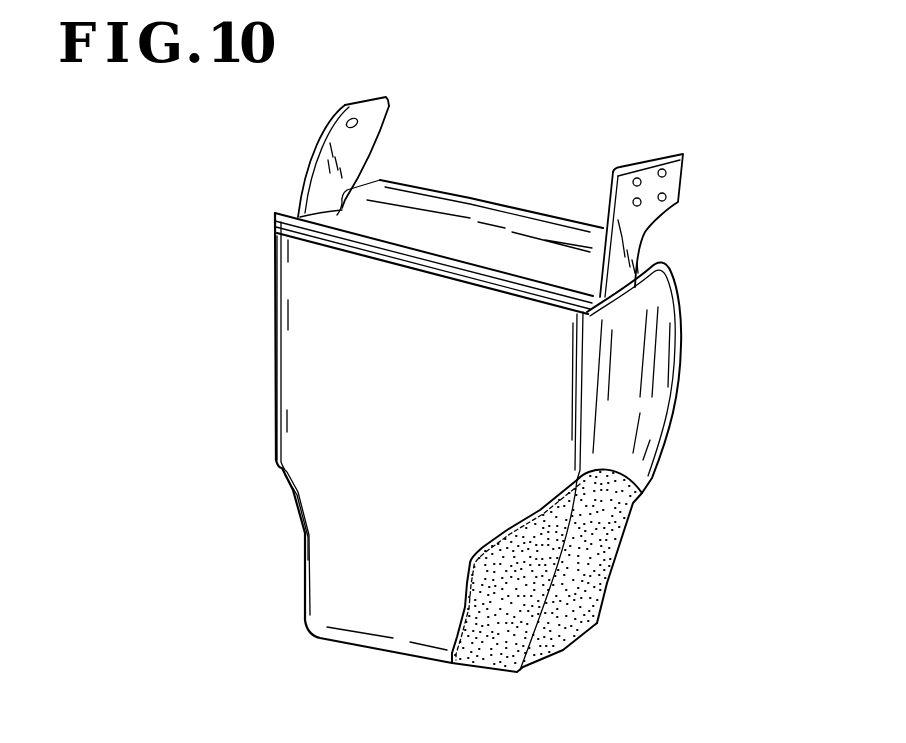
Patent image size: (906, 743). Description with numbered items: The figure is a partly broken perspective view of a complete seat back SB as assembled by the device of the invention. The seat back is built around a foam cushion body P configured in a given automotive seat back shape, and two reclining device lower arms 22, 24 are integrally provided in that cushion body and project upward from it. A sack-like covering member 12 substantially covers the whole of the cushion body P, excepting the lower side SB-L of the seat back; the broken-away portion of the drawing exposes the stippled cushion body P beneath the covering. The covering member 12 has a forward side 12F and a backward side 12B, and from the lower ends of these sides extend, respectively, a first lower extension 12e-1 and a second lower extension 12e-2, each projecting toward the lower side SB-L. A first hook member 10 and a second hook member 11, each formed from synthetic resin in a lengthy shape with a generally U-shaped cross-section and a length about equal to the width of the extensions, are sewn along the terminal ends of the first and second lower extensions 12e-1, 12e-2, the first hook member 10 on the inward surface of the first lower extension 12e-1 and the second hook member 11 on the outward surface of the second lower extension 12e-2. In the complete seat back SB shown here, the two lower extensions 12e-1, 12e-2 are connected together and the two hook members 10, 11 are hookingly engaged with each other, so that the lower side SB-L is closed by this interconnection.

The first hook member 10 is at (348, 233).
The second hook member 11 is at (402, 242).
The sack-like covering member 12 is at (322, 502).
The backward side of covering member 12B is at (320, 389).
The forward side of covering member 12F is at (683, 325).
The first lower extension 12e-1 is at (357, 273).
The second lower extension 12e-2 is at (487, 233).
The reclining device lower arm 22 is at (318, 152).
The reclining device lower arm 24 is at (677, 188).
The complete seat back SB is at (683, 410).
The lower side of seat back SB-L is at (483, 150).
The foam cushion body P is at (603, 563).